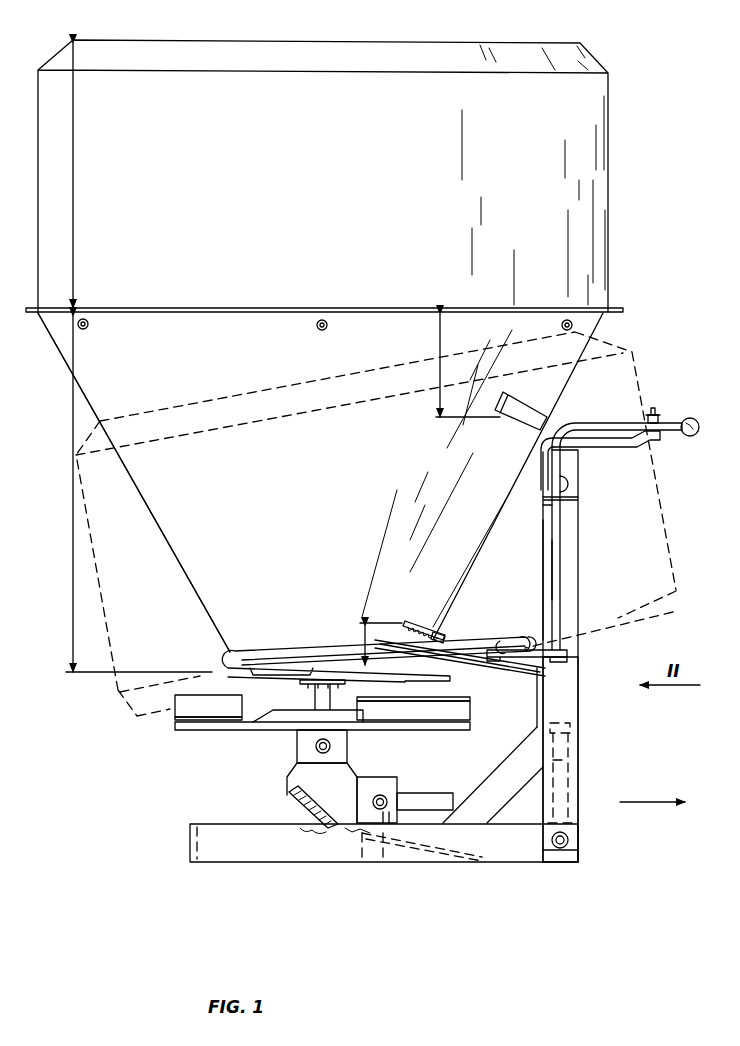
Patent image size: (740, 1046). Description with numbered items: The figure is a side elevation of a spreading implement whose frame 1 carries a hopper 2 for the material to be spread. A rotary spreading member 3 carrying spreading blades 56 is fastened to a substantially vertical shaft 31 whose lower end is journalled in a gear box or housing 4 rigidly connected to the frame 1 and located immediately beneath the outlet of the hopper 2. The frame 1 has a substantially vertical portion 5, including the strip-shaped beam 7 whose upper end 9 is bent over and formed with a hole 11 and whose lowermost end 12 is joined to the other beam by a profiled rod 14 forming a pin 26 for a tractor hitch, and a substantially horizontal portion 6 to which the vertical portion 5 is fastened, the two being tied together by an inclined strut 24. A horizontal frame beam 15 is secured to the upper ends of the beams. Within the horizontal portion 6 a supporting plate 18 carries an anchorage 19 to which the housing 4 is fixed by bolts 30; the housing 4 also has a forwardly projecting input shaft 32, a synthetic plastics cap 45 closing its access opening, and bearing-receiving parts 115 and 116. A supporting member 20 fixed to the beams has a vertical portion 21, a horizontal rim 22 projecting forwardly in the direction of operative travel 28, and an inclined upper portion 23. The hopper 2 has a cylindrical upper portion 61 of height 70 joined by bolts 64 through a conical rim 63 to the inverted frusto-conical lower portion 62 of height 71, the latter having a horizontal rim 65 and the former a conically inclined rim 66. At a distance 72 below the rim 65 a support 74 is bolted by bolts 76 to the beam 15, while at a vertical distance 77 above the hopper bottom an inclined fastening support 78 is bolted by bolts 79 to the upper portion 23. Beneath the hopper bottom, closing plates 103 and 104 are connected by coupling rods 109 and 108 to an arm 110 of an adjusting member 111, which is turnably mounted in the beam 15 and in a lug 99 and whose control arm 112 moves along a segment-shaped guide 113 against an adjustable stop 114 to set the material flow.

The frame 1 is at (580, 700).
The hopper 2 is at (172, 558).
The rotary spreading member 3 is at (174, 730).
The gear box or housing 4 is at (288, 778).
The substantially vertical portion 5 is at (578, 567).
The substantially horizontal portion 6 is at (310, 863).
The strip-shaped beam 7 is at (573, 590).
The upper end 9 is at (543, 506).
The holes 11 is at (572, 484).
The lowermost end 12 is at (578, 855).
The profiled rod 14 is at (580, 757).
The horizontal frame beam 15 is at (543, 498).
The supporting plate 18 is at (436, 856).
The anchorage 19 is at (383, 863).
The supporting member 20 is at (537, 693).
The vertical portion 21 is at (580, 672).
The horizontal rim 22 is at (572, 722).
The upper portion 23 is at (508, 667).
The inclined strut 24 is at (515, 762).
The pin 26 is at (570, 838).
The direction of operative travel 28 is at (652, 789).
The bolts 30 is at (361, 863).
The substantially vertical shaft 31 is at (313, 697).
The substantially horizontal input shaft 32 is at (452, 784).
The synthetic plastics cap 45 is at (292, 805).
The spreading blades 56 is at (208, 712).
The upper portion 61 is at (600, 130).
The lower portion 62 is at (160, 508).
The inwardly bent-over conical rim 63 is at (125, 702).
The bolts 64 is at (318, 328).
The horizontal rim 65 is at (228, 292).
The conically inclined rim 66 is at (502, 48).
The height 70 is at (73, 192).
The height 71 is at (73, 500).
The distance 72 is at (440, 352).
The support 74 is at (522, 410).
The bolts 76 is at (557, 435).
The vertical distance 77 is at (365, 652).
The inclined fastening support 78 is at (426, 607).
The bolts 79 is at (437, 627).
The lug 99 is at (580, 656).
The closing plate 103 is at (400, 672).
The closing plate 104 is at (398, 690).
The coupling rod 108 is at (257, 646).
The coupling rod 109 is at (304, 650).
The arm 110 is at (527, 616).
The adjusting member 111 is at (556, 557).
The control arm 112 is at (600, 422).
The segment-shaped guide 113 is at (613, 447).
The stop 114 is at (655, 408).
The part of the gear box 115 is at (298, 745).
The part of the gear box 116 is at (377, 775).